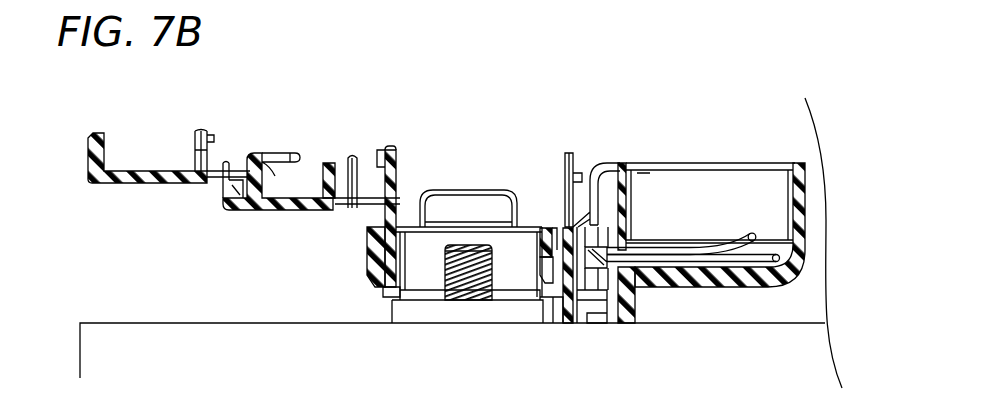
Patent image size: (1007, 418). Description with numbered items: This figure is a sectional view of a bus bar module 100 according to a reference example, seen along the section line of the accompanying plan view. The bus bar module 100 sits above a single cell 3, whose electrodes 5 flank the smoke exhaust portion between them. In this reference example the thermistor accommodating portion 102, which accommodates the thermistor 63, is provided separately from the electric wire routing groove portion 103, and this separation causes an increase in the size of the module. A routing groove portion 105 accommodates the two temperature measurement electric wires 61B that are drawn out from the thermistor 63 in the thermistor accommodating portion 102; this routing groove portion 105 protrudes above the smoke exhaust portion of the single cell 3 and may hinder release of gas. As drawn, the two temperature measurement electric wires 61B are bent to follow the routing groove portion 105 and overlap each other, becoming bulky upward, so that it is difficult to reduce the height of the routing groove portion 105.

The single cell 3 is at (192, 323).
The electrode 5 is at (473, 257).
The temperature measurement electric wires 61B is at (742, 245).
The thermistor 63 is at (600, 317).
The bus bar module 100 is at (610, 160).
The thermistor accommodating portion 102 is at (552, 285).
The electric wire routing groove portion 103 is at (300, 182).
The routing groove portion 105 is at (757, 200).